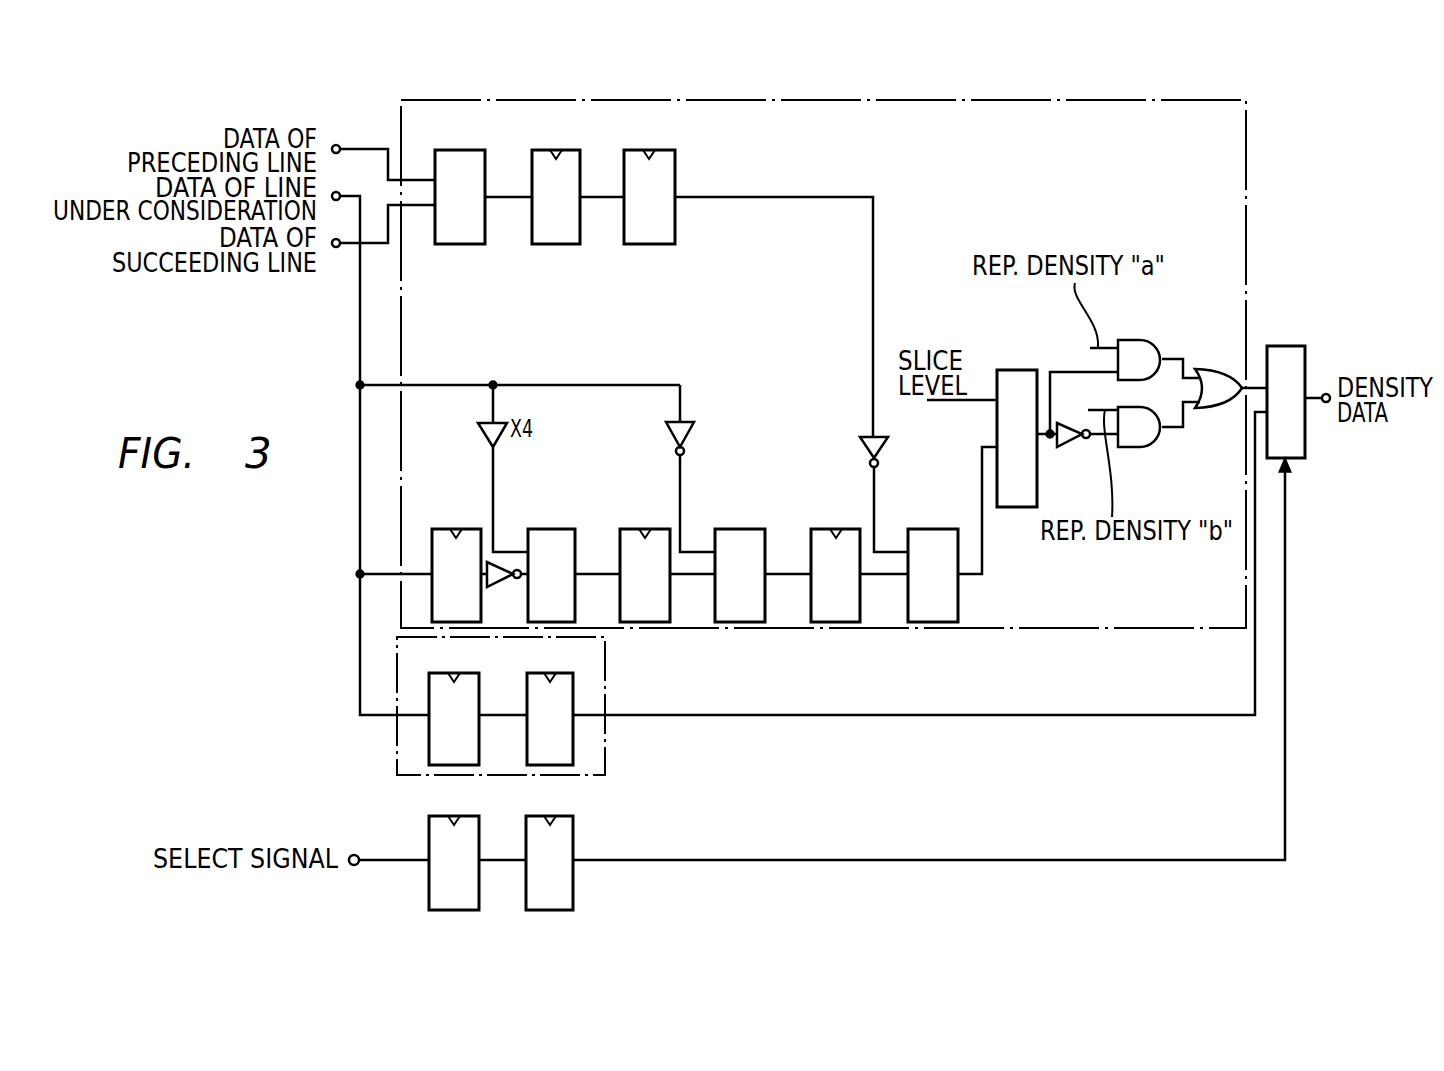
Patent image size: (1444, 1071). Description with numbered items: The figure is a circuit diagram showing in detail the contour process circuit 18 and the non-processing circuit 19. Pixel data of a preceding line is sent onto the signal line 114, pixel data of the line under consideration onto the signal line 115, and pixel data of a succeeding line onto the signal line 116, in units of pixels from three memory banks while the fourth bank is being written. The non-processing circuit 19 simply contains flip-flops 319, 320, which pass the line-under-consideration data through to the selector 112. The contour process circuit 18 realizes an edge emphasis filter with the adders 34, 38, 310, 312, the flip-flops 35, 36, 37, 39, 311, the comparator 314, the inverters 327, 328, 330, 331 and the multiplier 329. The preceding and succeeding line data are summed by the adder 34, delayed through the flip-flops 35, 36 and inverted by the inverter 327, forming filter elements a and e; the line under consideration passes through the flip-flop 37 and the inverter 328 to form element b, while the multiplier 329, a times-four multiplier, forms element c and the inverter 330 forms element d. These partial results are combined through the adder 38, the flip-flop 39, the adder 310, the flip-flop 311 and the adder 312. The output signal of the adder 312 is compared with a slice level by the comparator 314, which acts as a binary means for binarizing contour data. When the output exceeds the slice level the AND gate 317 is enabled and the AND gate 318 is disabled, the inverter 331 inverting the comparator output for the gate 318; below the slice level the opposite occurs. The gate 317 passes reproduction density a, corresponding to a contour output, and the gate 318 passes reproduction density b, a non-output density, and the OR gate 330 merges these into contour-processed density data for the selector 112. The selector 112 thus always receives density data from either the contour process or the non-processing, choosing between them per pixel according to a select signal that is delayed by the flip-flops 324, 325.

The contour process circuit 18 is at (1075, 100).
The non-processing circuit 19 is at (605, 690).
The selector 112 is at (1285, 346).
The signal line 114 is at (359, 143).
The signal line 115 is at (360, 322).
The signal line 116 is at (348, 245).
The adder 34 is at (466, 150).
The flip-flop 35 is at (551, 150).
The flip-flop 36 is at (645, 150).
The flip-flop 37 is at (450, 529).
The adder 38 is at (555, 529).
The flip-flop 39 is at (655, 529).
The adder 310 is at (730, 529).
The flip-flop 311 is at (830, 529).
The adder 312 is at (928, 529).
The comparator 314 is at (1017, 369).
The AND gate 317 is at (1133, 340).
The AND gate 318 is at (1155, 447).
The flip-flop 319 is at (455, 673).
The flip-flop 320 is at (548, 673).
The flip-flop 324 is at (438, 816).
The flip-flop 325 is at (568, 816).
The inverter 327 is at (866, 437).
The inverter 328 is at (508, 552).
The multiplier 329 is at (480, 436).
The inverter / OR gate 330 is at (690, 430).
The inverter 331 is at (1070, 447).